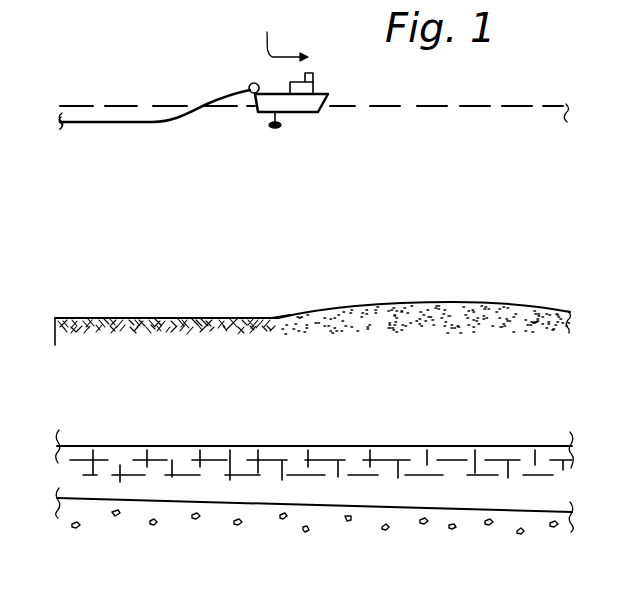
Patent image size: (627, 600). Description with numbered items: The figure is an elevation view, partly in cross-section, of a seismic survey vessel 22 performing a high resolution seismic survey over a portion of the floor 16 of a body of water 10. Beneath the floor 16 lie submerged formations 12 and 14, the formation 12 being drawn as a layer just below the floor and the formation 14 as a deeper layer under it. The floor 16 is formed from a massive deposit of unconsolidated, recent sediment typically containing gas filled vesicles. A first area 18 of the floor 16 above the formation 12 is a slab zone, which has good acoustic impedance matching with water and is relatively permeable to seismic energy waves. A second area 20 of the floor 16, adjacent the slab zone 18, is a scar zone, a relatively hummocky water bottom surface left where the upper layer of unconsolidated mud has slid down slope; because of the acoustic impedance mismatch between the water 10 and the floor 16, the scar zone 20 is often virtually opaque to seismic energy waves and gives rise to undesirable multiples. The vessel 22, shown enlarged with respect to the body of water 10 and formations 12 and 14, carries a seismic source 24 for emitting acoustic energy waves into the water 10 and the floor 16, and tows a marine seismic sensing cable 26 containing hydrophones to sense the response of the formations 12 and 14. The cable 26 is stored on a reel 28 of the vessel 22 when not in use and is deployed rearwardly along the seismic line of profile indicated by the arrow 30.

The body of water 10 is at (443, 171).
The submerged formation 12 is at (505, 505).
The submerged formation 14 is at (350, 567).
The floor of the body of water 16 is at (283, 315).
The slab zone 18 is at (447, 372).
The scar zone 20 is at (150, 373).
The seismic survey vessel 22 is at (337, 95).
The seismic source 24 is at (270, 129).
The seismic sensing cable 26 is at (108, 125).
The reel 28 is at (255, 83).
The arrow 30 is at (280, 34).